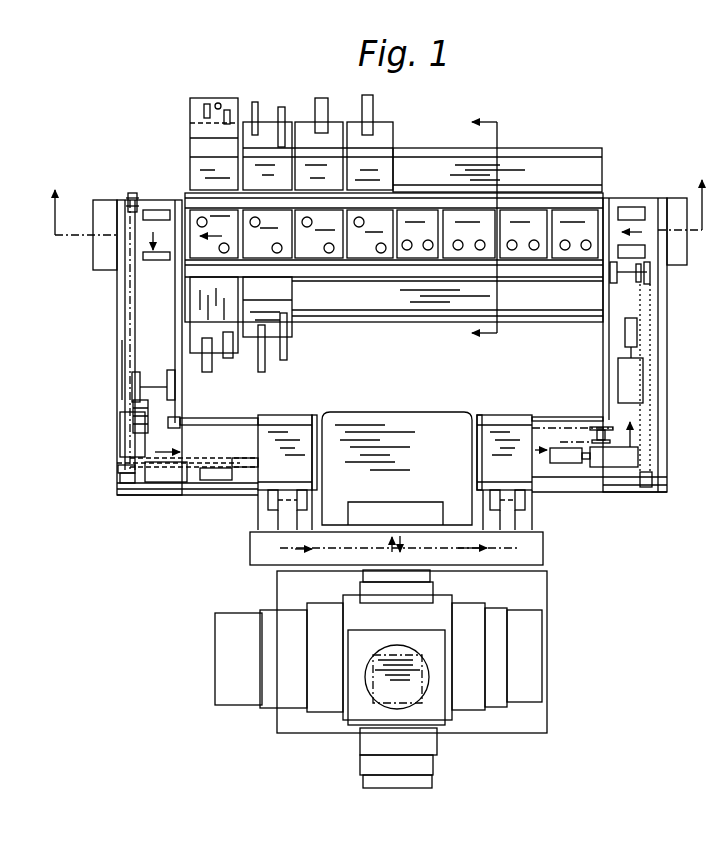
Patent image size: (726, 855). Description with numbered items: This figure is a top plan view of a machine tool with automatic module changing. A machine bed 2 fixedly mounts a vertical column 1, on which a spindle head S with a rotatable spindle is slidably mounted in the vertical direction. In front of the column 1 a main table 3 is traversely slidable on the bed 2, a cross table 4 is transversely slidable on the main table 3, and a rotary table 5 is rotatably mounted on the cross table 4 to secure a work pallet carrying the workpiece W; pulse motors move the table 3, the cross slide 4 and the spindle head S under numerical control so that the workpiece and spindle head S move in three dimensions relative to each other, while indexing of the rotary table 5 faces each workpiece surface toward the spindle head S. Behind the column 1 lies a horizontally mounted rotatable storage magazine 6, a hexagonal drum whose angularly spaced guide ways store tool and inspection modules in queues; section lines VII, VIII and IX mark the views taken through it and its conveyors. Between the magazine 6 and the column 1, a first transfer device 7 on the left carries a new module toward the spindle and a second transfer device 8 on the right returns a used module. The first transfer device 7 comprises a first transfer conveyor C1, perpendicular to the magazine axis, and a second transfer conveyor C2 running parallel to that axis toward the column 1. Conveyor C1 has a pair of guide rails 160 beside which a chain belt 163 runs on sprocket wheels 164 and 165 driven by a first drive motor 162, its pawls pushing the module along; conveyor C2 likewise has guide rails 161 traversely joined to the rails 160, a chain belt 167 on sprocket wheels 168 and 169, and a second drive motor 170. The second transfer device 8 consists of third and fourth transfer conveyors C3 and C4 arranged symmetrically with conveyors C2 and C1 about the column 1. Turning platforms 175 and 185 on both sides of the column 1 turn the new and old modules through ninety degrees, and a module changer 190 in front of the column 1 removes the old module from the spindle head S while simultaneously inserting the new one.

The vertical column 1 is at (413, 423).
The machine bed 2 is at (533, 595).
The main table 3 is at (342, 718).
The cross table 4 is at (377, 718).
The rotary table 5 is at (440, 727).
The storage magazine 6 is at (448, 148).
The first transfer device 7 is at (115, 508).
The second transfer device 8 is at (661, 503).
The guide rails 160 is at (180, 333).
The guide rails 161 is at (212, 422).
The first drive motor 162 is at (122, 442).
The chain belt 163 is at (127, 362).
The sprocket wheel 164 is at (135, 196).
The sprocket wheel 165 is at (130, 420).
The chain belt 167 is at (238, 470).
The sprocket wheel 168 is at (118, 473).
The sprocket wheel 169 is at (252, 472).
The second drive motor 170 is at (127, 477).
The turning platform 175 is at (294, 414).
The turning platform 185 is at (493, 414).
The module changer 190 is at (248, 562).
The first transfer conveyor C1 is at (116, 292).
The second transfer conveyor C2 is at (238, 418).
The third transfer conveyor C3 is at (560, 417).
The fourth transfer conveyor C4 is at (670, 347).
The workpiece W is at (413, 680).
The spindle head S is at (391, 552).
The section VII is at (79, 199).
The section VIII is at (685, 193).
The section IX is at (482, 231).